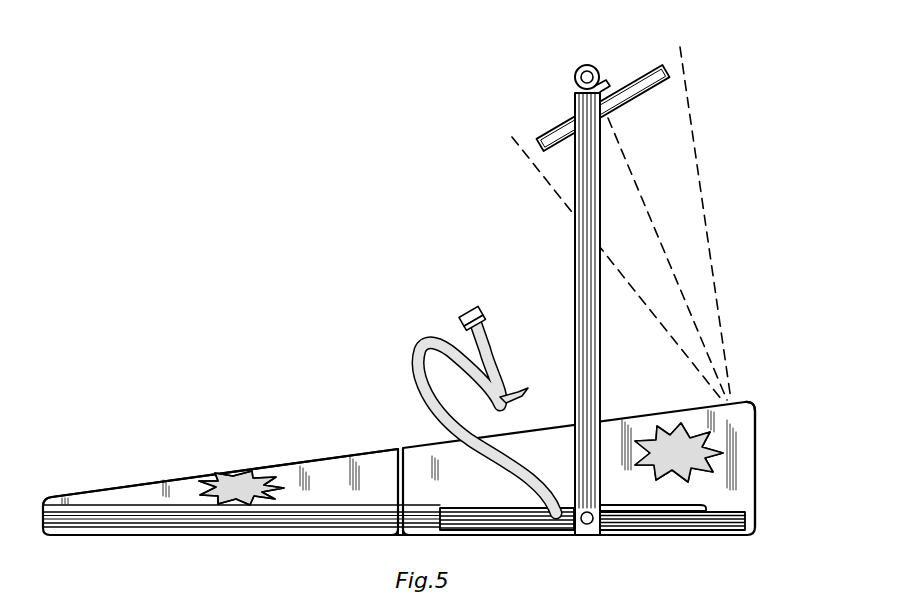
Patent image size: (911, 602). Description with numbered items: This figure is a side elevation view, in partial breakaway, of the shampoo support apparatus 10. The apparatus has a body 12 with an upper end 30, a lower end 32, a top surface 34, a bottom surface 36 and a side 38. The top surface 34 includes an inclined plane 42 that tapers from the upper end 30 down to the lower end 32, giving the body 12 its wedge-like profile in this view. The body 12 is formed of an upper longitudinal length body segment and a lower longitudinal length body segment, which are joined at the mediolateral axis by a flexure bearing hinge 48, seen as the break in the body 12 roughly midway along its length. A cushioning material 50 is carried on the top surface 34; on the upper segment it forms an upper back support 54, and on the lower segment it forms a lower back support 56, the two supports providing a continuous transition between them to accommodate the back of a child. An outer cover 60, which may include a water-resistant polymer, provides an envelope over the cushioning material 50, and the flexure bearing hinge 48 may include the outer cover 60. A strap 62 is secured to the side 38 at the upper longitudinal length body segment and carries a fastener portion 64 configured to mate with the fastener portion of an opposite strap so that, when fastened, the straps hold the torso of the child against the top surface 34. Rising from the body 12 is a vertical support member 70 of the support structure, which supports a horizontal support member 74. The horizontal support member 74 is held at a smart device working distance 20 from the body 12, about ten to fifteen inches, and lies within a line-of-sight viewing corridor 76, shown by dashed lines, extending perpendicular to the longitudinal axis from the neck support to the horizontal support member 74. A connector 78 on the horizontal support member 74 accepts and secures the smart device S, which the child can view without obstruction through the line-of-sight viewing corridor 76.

The shampoo support apparatus 10 is at (332, 262).
The body 12 is at (424, 473).
The smart device working distance 20 is at (652, 222).
The upper end 30 is at (757, 410).
The lower end 32 is at (42, 500).
The top surface 34 is at (112, 486).
The bottom surface 36 is at (150, 537).
The side 38 is at (437, 503).
The inclined plane 42 is at (334, 458).
The flexure bearing hinge 48 is at (400, 450).
The cushioning material 50 is at (222, 488).
The upper back support 54 is at (666, 440).
The lower back support 56 is at (242, 480).
The outer cover 60 is at (757, 507).
The strap 62 is at (418, 347).
The fastener portion 64 is at (470, 311).
The vertical support member 70 is at (578, 300).
The horizontal support member 74 is at (579, 68).
The line-of-sight viewing corridor 76 is at (680, 160).
The connector 78 is at (595, 66).
The smart device S is at (555, 118).